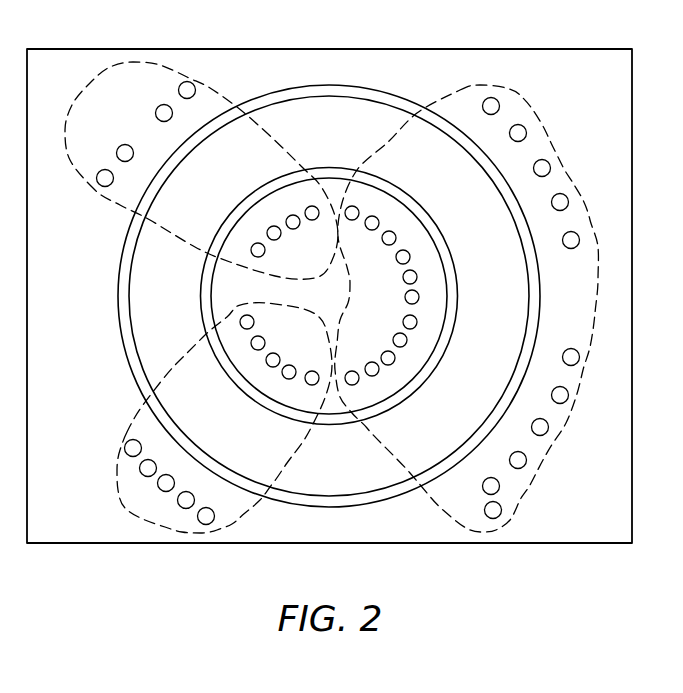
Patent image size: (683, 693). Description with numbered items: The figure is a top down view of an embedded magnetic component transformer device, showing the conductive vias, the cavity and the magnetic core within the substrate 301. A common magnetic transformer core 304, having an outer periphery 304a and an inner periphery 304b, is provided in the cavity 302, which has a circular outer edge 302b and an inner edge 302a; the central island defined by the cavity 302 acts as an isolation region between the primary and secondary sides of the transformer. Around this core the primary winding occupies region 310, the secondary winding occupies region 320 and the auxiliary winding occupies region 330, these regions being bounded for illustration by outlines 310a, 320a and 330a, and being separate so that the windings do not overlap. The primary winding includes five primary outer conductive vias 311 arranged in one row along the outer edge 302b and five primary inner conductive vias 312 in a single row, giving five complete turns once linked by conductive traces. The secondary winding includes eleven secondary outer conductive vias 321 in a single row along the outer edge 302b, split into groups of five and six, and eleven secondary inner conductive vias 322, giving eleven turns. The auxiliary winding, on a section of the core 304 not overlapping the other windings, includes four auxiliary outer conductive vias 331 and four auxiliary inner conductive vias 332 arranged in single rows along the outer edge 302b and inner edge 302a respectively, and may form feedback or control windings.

The housing / substrate 301 is at (611, 58).
The cavity 302 is at (329, 296).
The inner edge of the cavity 302a is at (212, 294).
The outer edge of the cavity 302b is at (333, 86).
The magnetic transformer core 304 is at (329, 318).
The outer periphery 304a is at (462, 440).
The inner periphery 304b is at (450, 340).
The region of the substrate for the primary winding 310 is at (193, 418).
The outline 310a is at (131, 427).
The primary outer conductive vias 311 is at (132, 456).
The primary inner conductive vias 312 is at (254, 323).
The region of the substrate for the secondary winding 320 is at (467, 274).
The outline 320a is at (500, 84).
The secondary outer conductive vias 321 is at (499, 109).
The secondary inner conductive vias 322 is at (352, 220).
The region of the substrate for the auxiliary winding 330 is at (188, 170).
The outline 330a is at (95, 190).
The auxiliary outer conductive vias 331 is at (179, 91).
The auxiliary inner conductive vias 332 is at (265, 252).